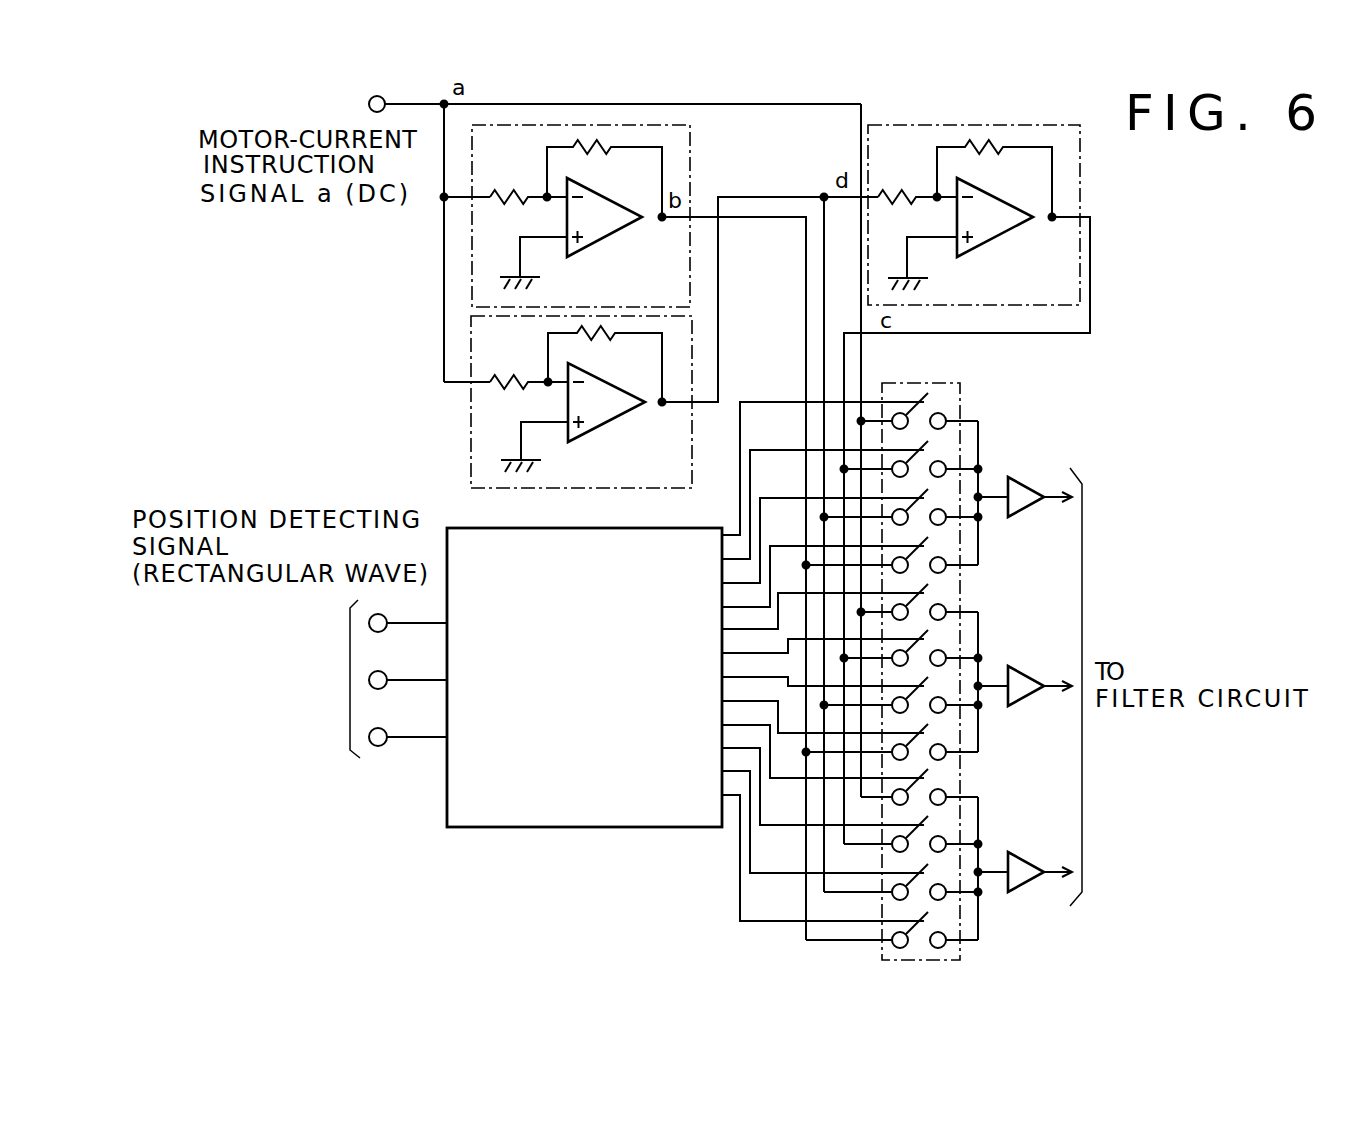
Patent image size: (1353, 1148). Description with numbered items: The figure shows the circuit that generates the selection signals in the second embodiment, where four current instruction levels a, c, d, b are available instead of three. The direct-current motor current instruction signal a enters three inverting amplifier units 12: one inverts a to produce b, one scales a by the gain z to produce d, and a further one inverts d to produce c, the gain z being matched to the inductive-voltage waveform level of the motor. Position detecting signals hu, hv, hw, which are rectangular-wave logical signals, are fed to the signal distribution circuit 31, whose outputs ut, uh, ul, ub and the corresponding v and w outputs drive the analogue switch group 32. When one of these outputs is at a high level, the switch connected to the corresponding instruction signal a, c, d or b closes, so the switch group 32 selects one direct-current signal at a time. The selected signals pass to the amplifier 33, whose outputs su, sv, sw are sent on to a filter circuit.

The inverting amplifier 12 is at (691, 181).
The signal distribution circuit 31 is at (512, 828).
The analogue switch group 32 is at (960, 404).
The amplifier 33 is at (1013, 475).